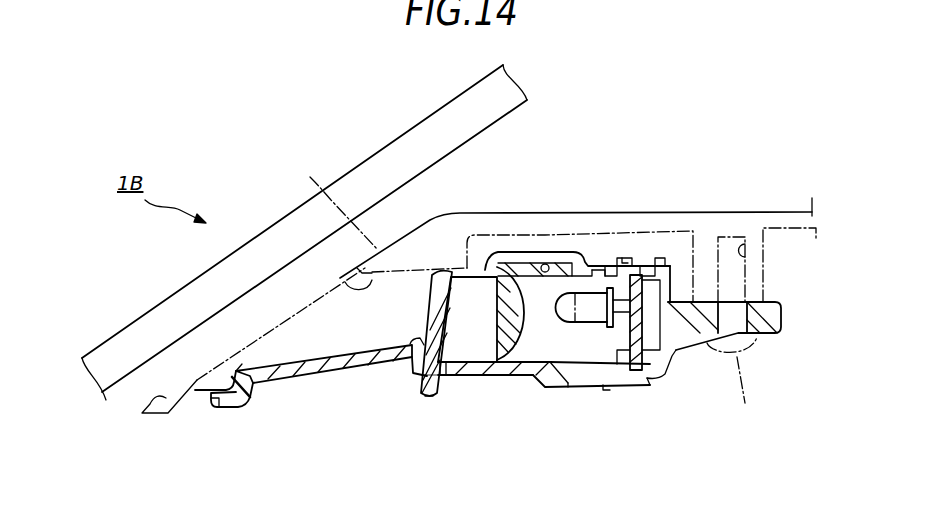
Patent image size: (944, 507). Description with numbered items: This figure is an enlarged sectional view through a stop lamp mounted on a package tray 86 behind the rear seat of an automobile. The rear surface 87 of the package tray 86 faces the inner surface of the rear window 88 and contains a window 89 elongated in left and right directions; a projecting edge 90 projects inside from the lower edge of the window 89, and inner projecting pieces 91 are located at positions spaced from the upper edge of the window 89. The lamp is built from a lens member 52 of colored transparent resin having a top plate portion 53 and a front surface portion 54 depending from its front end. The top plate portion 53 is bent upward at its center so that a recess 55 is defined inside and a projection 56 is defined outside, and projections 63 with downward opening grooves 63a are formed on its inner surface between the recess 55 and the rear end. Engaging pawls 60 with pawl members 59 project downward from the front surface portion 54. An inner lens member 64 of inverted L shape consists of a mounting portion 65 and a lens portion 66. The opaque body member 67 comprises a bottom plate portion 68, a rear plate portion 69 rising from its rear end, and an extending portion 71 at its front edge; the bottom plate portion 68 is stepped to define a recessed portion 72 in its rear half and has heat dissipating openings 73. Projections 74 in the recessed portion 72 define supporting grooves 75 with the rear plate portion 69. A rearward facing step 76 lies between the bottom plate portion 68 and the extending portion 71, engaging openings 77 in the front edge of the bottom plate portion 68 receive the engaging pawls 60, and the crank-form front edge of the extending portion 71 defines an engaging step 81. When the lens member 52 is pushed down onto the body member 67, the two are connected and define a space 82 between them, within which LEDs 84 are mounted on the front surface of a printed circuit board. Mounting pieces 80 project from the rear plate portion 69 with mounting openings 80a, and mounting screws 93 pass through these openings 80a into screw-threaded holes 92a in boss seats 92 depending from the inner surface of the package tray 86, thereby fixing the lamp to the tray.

The lens member 52 is at (603, 263).
The top plate portion 53 is at (590, 263).
The front surface portion 54 is at (434, 294).
The recess 55 is at (549, 264).
The projection 56 is at (540, 254).
The pawl member 59 is at (438, 395).
The engaging pawl 60 is at (429, 398).
The projection 63 is at (615, 273).
The downward opening groove 63a is at (637, 273).
The inner lens member 64 is at (505, 380).
The mounting portion 65 is at (512, 255).
The lens portion 66 is at (527, 317).
The body member 67 is at (660, 390).
The bottom plate portion 68 is at (470, 376).
The rear plate portion 69 is at (658, 375).
The extending portion 71 is at (295, 374).
The recessed portion 72 is at (588, 385).
The heat dissipating opening 73 is at (606, 388).
The projection 74 is at (630, 358).
The supporting groove 75 is at (647, 372).
The rearward facing step 76 is at (424, 342).
The engaging opening 77 is at (418, 395).
The mounting piece 80 is at (777, 317).
The mounting opening 80a is at (743, 352).
The engaging step 81 is at (237, 410).
The space 82 is at (467, 319).
The LED 84 is at (570, 385).
The package tray 86 is at (750, 211).
The rear surface 87 is at (333, 200).
The rear window 88 is at (405, 125).
The window 89 is at (345, 282).
The projecting edge 90 is at (134, 416).
The inner projecting piece 91 is at (242, 357).
The boss seat 92 is at (766, 290).
The screw-threaded hole 92a is at (748, 247).
The mounting screw 93 is at (745, 394).